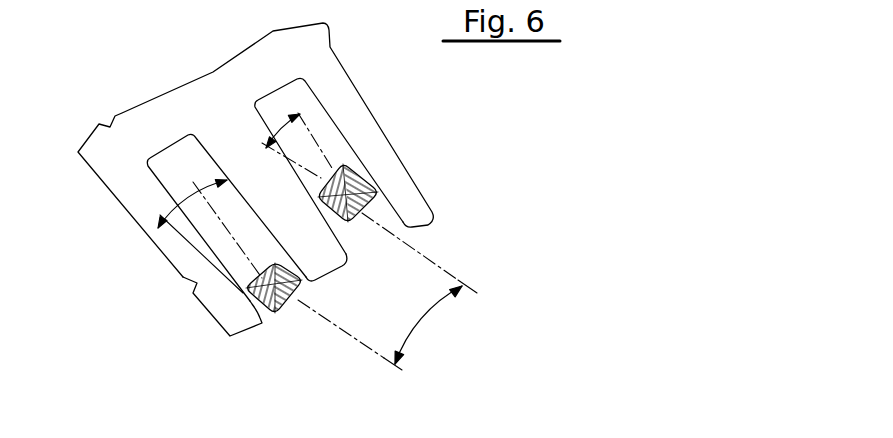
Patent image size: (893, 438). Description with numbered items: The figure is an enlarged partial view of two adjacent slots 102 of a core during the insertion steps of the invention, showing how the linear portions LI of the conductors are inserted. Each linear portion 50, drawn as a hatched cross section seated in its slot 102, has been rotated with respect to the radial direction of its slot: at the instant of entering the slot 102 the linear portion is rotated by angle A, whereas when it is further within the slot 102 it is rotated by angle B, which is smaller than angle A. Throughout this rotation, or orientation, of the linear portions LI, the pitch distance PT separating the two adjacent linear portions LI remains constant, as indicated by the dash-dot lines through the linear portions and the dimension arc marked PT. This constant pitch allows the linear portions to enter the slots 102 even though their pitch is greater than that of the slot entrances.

The slot 102 is at (176, 163).
The linear portion 50 is at (260, 323).
The linear portion LI is at (270, 316).
The angle A is at (192, 203).
The angle B is at (283, 127).
The pitch distance PT is at (426, 325).